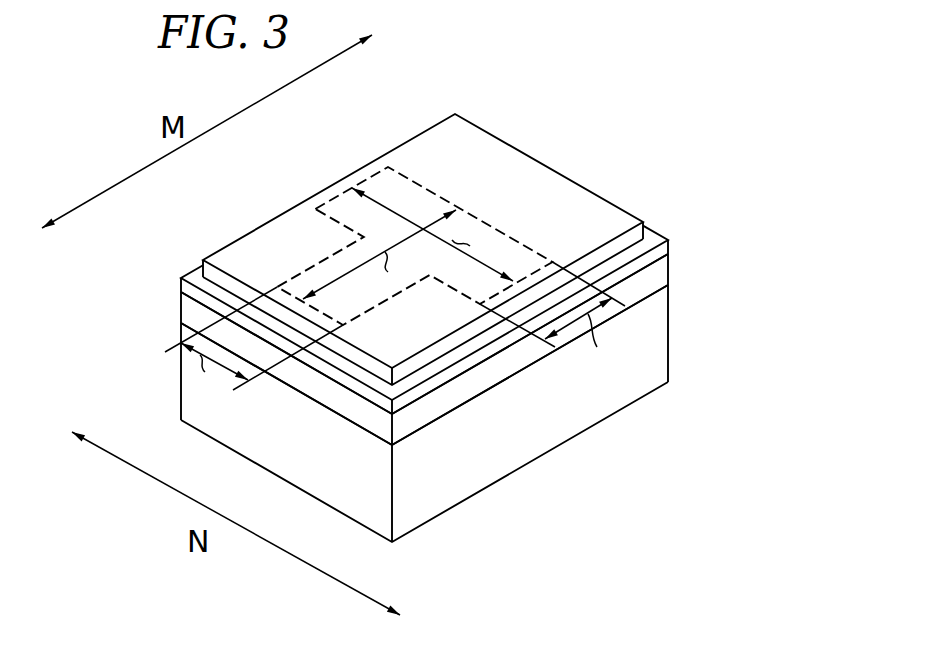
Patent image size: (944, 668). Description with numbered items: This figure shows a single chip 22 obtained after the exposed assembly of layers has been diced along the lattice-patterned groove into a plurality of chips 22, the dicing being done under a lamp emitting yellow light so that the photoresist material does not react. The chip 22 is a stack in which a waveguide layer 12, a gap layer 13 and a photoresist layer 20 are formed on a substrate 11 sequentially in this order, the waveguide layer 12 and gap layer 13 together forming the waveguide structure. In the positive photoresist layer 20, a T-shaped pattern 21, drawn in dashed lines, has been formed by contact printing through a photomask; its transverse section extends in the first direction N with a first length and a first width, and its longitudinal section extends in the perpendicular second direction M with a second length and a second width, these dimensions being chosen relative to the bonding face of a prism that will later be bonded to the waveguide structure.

The substrate 11 is at (668, 350).
The waveguide layer 12 is at (667, 274).
The gap layer 13 is at (670, 242).
The photoresist layer 20 is at (533, 175).
The T-shaped pattern 21 is at (340, 207).
The chip 22 is at (694, 170).